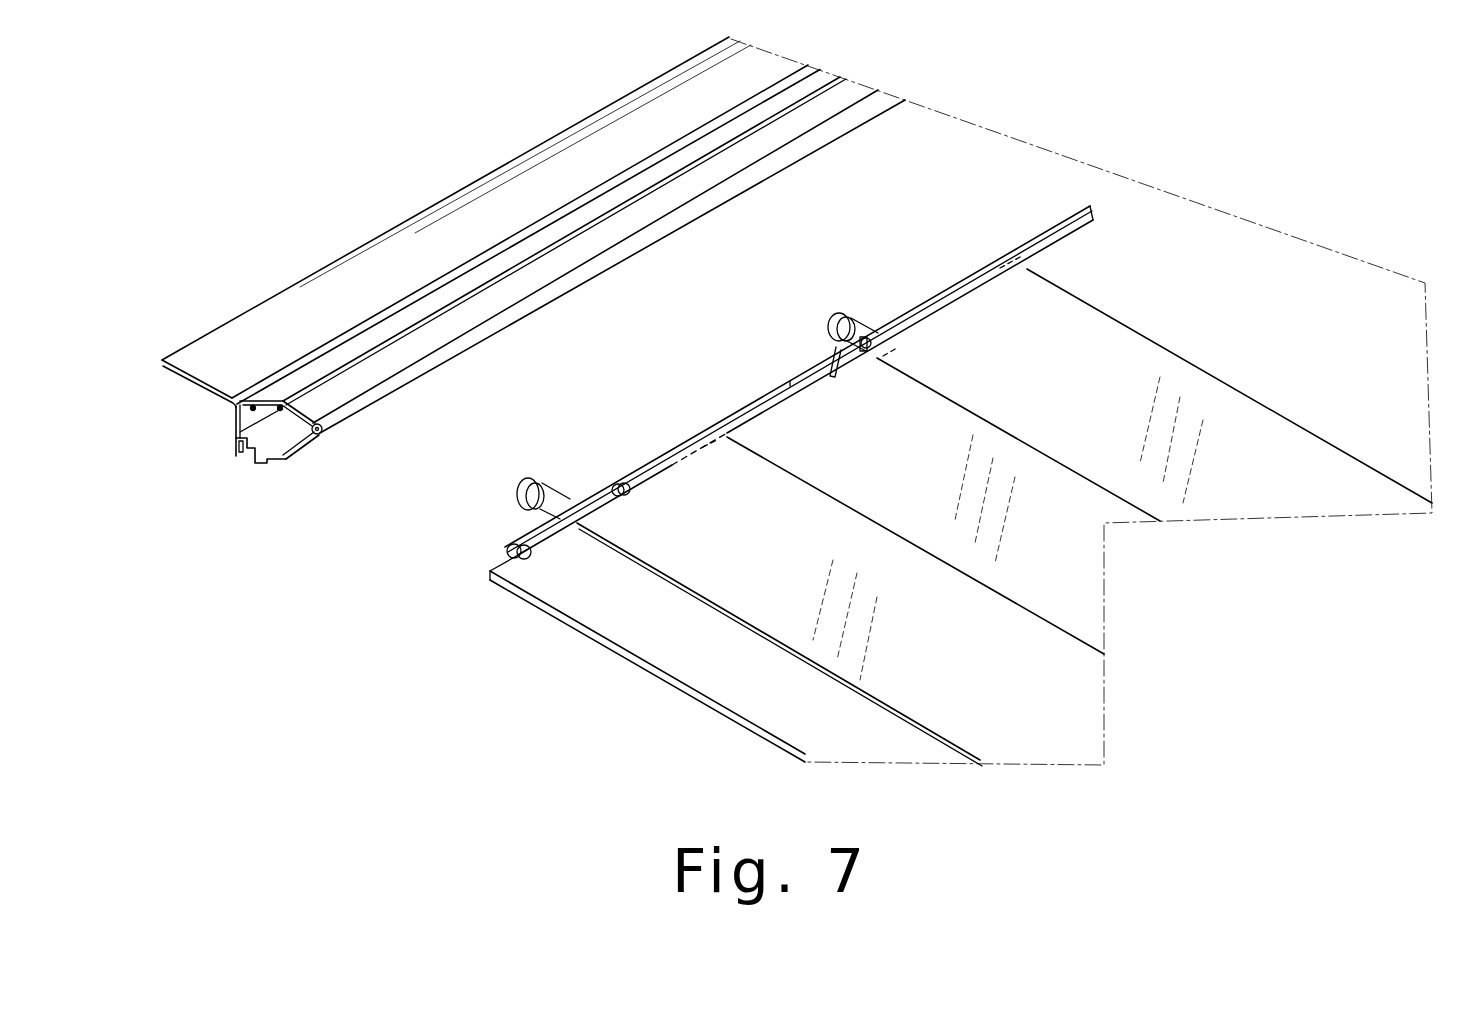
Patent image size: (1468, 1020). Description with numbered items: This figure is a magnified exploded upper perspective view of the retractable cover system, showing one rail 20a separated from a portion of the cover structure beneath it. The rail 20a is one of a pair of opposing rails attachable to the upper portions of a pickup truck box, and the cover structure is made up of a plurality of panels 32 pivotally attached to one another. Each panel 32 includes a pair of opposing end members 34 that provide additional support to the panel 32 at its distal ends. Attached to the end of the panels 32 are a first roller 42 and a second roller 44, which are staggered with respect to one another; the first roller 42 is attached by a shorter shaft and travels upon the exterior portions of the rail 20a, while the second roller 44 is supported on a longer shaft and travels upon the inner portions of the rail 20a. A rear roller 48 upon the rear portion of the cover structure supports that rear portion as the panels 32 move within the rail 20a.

The rail 20a is at (438, 238).
The panel 32 is at (827, 452).
The end member 34 is at (701, 431).
The first roller 42 is at (848, 313).
The second roller 44 is at (547, 486).
The rear roller 48 is at (508, 544).